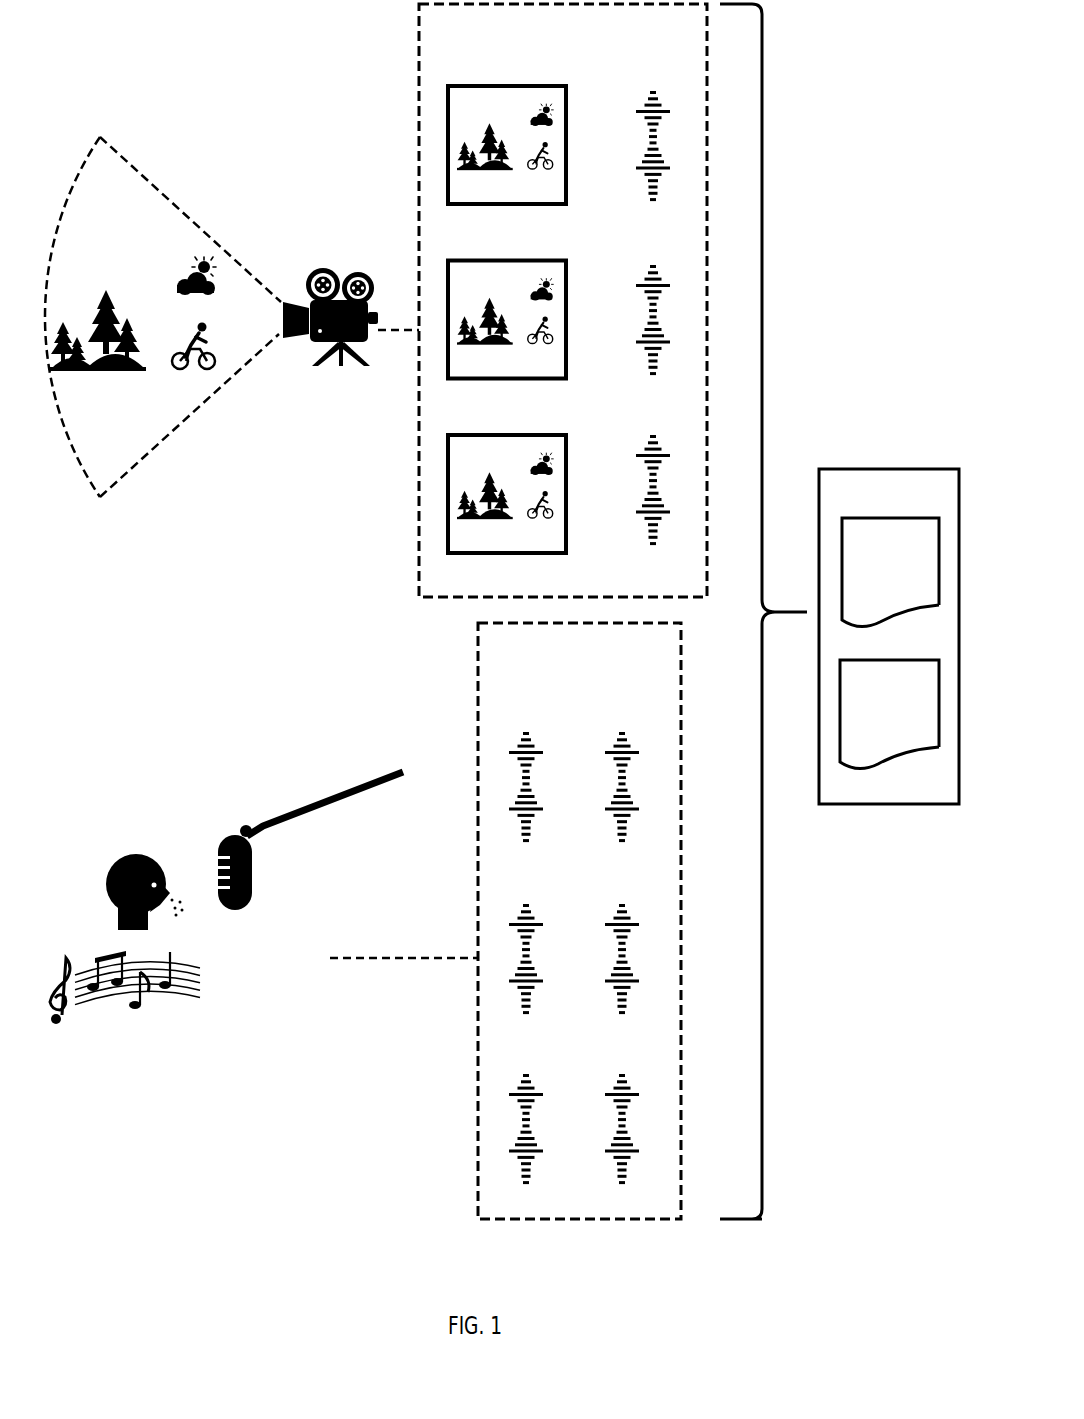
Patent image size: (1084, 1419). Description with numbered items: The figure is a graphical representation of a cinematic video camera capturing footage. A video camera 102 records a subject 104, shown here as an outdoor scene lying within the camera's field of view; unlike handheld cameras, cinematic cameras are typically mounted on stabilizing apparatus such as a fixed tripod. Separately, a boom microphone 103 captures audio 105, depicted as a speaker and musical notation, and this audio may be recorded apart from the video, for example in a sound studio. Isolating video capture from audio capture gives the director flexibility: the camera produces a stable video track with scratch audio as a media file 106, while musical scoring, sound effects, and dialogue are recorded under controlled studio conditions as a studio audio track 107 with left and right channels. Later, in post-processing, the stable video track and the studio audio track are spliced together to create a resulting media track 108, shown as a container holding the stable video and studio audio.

The video camera 102 is at (322, 268).
The boom microphone 103 is at (308, 803).
The subject 104 is at (274, 385).
The audio 105 is at (130, 1042).
The media file 106 is at (419, 113).
The studio audio track 107 is at (478, 922).
The resulting media track 108 is at (873, 468).